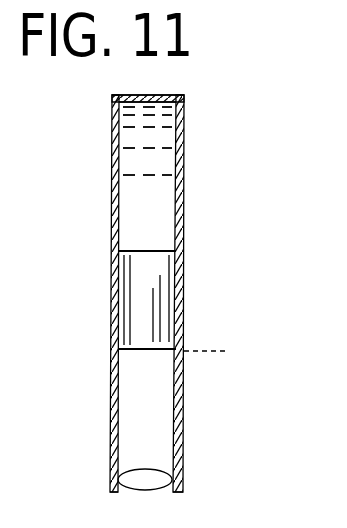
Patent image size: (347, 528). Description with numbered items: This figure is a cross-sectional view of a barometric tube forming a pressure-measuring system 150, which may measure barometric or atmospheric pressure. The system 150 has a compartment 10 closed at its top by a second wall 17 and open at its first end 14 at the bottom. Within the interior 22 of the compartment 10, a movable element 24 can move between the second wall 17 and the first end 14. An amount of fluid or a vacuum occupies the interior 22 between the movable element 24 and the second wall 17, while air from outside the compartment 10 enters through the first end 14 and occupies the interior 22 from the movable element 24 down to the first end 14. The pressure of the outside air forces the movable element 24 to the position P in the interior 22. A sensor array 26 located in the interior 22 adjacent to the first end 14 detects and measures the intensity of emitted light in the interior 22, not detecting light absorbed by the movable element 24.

The system 150 is at (77, 233).
The second wall 17 is at (170, 96).
The compartment 10 is at (138, 161).
The movable element 24 is at (170, 268).
The interior 22 is at (136, 373).
The position P is at (211, 352).
The sensor array 26 is at (165, 482).
The first end 14 is at (110, 492).